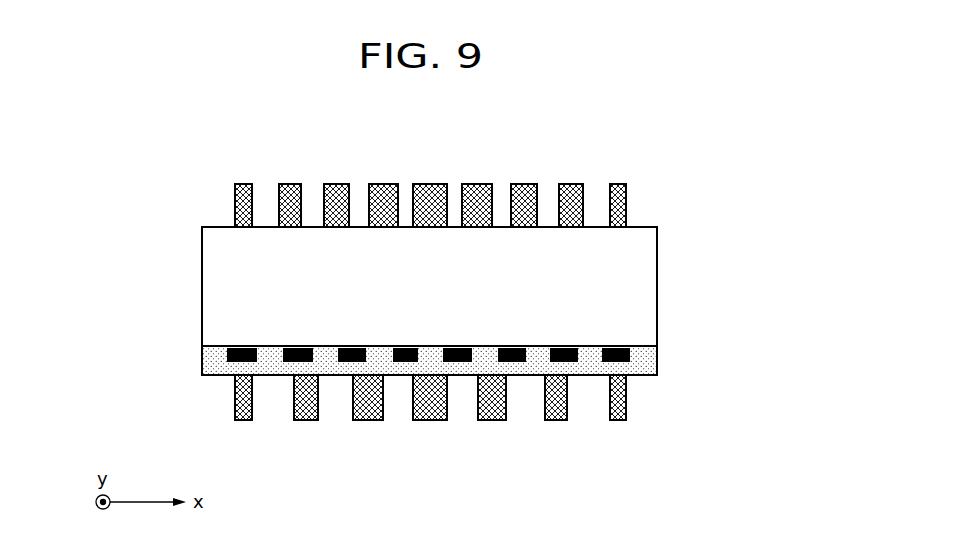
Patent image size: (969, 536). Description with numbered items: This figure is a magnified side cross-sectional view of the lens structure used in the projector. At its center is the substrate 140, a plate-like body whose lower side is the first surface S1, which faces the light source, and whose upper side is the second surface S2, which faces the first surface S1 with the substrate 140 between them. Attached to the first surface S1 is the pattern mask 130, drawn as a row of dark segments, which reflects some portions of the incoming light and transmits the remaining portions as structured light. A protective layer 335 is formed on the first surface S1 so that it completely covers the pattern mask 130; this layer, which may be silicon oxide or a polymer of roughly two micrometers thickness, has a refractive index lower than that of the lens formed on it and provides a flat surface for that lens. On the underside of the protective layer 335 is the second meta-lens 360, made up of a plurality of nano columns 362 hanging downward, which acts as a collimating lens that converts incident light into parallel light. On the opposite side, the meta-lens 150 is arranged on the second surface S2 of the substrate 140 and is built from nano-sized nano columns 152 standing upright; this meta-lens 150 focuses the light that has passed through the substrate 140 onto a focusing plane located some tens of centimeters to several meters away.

The pattern mask 130 is at (441, 362).
The substrate 140 is at (217, 283).
The meta-lens 150 is at (640, 206).
The nano columns 152 is at (521, 184).
The protective layer 335 is at (213, 360).
The second meta-lens 360 is at (642, 401).
The nano columns 362 is at (548, 421).
The first surface S1 is at (596, 346).
The second surface S2 is at (597, 227).